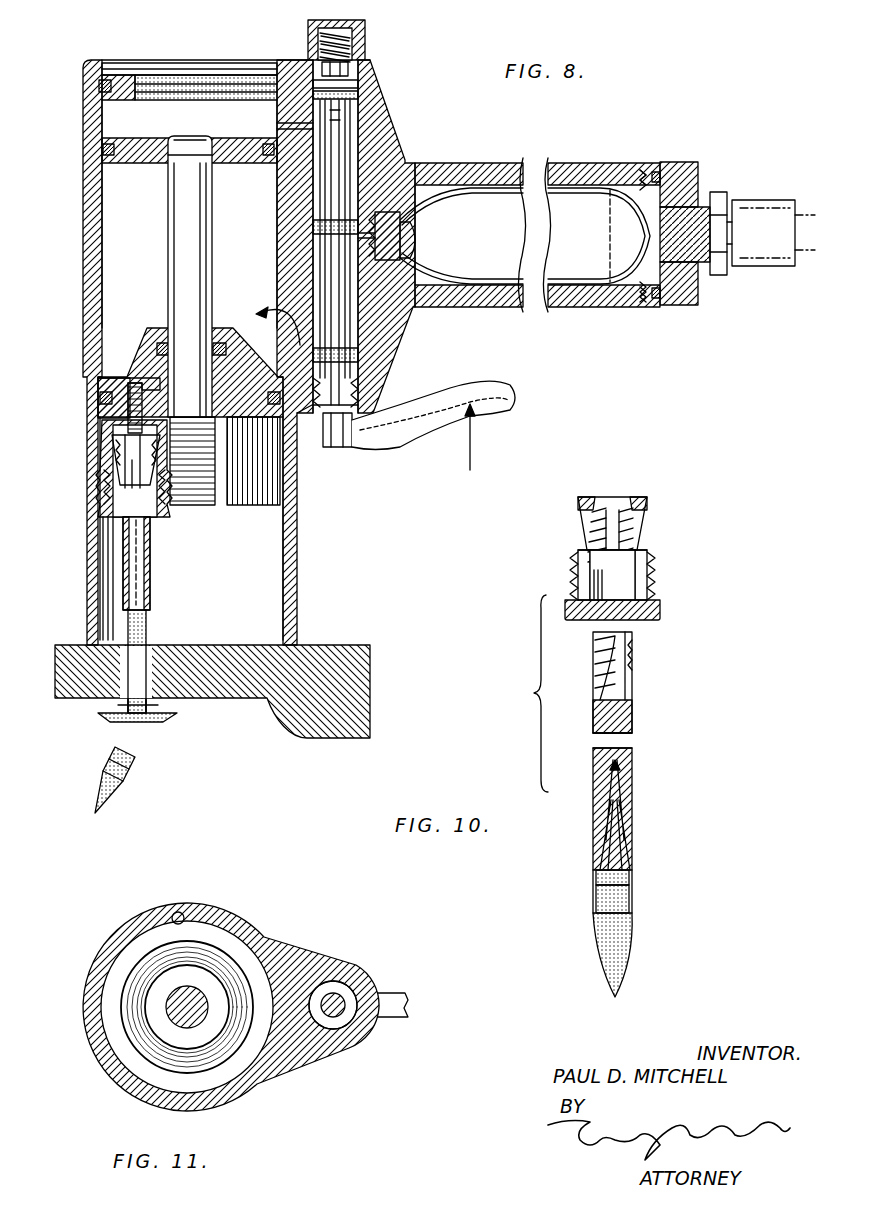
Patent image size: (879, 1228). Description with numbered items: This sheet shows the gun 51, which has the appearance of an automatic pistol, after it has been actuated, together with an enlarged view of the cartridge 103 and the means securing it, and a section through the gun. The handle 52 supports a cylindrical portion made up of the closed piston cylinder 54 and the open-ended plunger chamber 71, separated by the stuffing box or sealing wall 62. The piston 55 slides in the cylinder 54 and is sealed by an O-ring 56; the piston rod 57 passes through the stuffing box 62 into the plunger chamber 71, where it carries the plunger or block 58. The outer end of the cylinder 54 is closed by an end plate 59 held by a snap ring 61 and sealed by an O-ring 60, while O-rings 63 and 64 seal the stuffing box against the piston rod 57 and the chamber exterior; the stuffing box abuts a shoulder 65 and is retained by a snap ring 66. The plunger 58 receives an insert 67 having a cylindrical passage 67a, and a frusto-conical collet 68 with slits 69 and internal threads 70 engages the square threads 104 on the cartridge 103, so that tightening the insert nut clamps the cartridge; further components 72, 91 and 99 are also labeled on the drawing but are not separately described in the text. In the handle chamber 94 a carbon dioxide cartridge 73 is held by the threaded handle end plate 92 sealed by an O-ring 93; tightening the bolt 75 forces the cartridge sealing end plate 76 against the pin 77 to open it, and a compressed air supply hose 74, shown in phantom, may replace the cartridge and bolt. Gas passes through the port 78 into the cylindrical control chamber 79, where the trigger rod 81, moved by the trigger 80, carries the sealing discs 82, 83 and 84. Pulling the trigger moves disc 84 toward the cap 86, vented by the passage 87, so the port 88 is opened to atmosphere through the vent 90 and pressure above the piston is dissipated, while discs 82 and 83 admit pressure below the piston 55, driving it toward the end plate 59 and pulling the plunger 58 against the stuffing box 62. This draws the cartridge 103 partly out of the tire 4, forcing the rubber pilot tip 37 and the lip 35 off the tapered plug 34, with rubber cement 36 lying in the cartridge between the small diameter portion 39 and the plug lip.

In FIG. 8, the base plate 4 is at (352, 688).
In FIG. 8, the tapered plug 34 is at (92, 698).
In FIG. 10, the tapered plug 34 is at (636, 752).
In FIG. 8, the lip 35 is at (172, 722).
In FIG. 10, the lip 35 is at (632, 815).
In FIG. 8, the rubber cement 36 is at (95, 648).
In FIG. 10, the rubber cement 36 is at (598, 878).
In FIG. 8, the pilot tip 37 is at (118, 795).
In FIG. 10, the pilot tip 37 is at (625, 950).
In FIG. 8, the small diameter portion 39 is at (140, 770).
In FIG. 10, the small diameter portion 39 is at (632, 897).
In FIG. 8, the gun 51 is at (78, 73).
In FIG. 11, the gun 51 is at (242, 918).
In FIG. 8, the handle 52 is at (562, 163).
In FIG. 8, the piston cylinder 54 is at (189, 214).
In FIG. 11, the piston cylinder 54 is at (178, 912).
In FIG. 8, the piston 55 is at (140, 135).
In FIG. 8, the O-ring 56 is at (102, 150).
In FIG. 8, the piston rod 57 is at (178, 236).
In FIG. 11, the piston rod 57 is at (172, 1005).
In FIG. 8, the plunger 58 is at (248, 508).
In FIG. 8, the end plate 59 is at (115, 78).
In FIG. 8, the O-ring 60 is at (180, 88).
In FIG. 8, the snap ring 61 is at (226, 70).
In FIG. 8, the stuffing box 62 is at (246, 378).
In FIG. 11, the stuffing box 62 is at (155, 952).
In FIG. 8, the O-ring 63 is at (163, 343).
In FIG. 8, the O-ring 64 is at (98, 398).
In FIG. 8, the shoulder 65 is at (97, 380).
In FIG. 8, the snap ring 66 is at (295, 420).
In FIG. 8, the insert 67 is at (160, 520).
In FIG. 10, the insert 67 is at (657, 612).
In FIG. 8, the cylindrical passage 67a is at (118, 500).
In FIG. 10, the cylindrical passage 67a is at (648, 585).
In FIG. 8, the collet 68 is at (125, 447).
In FIG. 10, the collet 68 is at (645, 505).
In FIG. 8, the slits 69 is at (122, 471).
In FIG. 10, the slits 69 is at (637, 525).
In FIG. 10, the internal threads 70 is at (625, 545).
In FIG. 8, the plunger chamber 71 is at (191, 528).
In FIG. 8, the threaded stud 72 is at (126, 532).
In FIG. 8, the CO2 cartridge 73 is at (599, 236).
In FIG. 8, the compressed air supply hose 74 is at (766, 200).
In FIG. 8, the bolt 75 is at (718, 195).
In FIG. 8, the sealing end plate 76 is at (402, 226).
In FIG. 8, the pin 77 is at (407, 240).
In FIG. 8, the port 78 is at (354, 250).
In FIG. 8, the control chamber 79 is at (352, 122).
In FIG. 11, the control chamber 79 is at (357, 966).
In FIG. 8, the trigger 80 is at (452, 422).
In FIG. 11, the trigger 80 is at (400, 1012).
In FIG. 8, the trigger rod 81 is at (345, 425).
In FIG. 11, the trigger rod 81 is at (334, 992).
In FIG. 8, the sealing disc 82 is at (365, 354).
In FIG. 8, the sealing disc 83 is at (316, 228).
In FIG. 8, the sealing disc 84 is at (362, 88).
In FIG. 8, the cap 86 is at (314, 30).
In FIG. 8, the passage 87 is at (334, 22).
In FIG. 8, the port 88 is at (313, 127).
In FIG. 8, the vent 90 is at (365, 100).
In FIG. 8, the threads 91 is at (375, 382).
In FIG. 8, the handle end plate 92 is at (690, 306).
In FIG. 8, the O-ring 93 is at (645, 306).
In FIG. 8, the handle chamber 94 is at (628, 172).
In FIG. 8, the passage 99 is at (268, 313).
In FIG. 8, the cartridge 103 is at (148, 575).
In FIG. 10, the cartridge 103 is at (638, 690).
In FIG. 10, the threads 104 is at (635, 665).